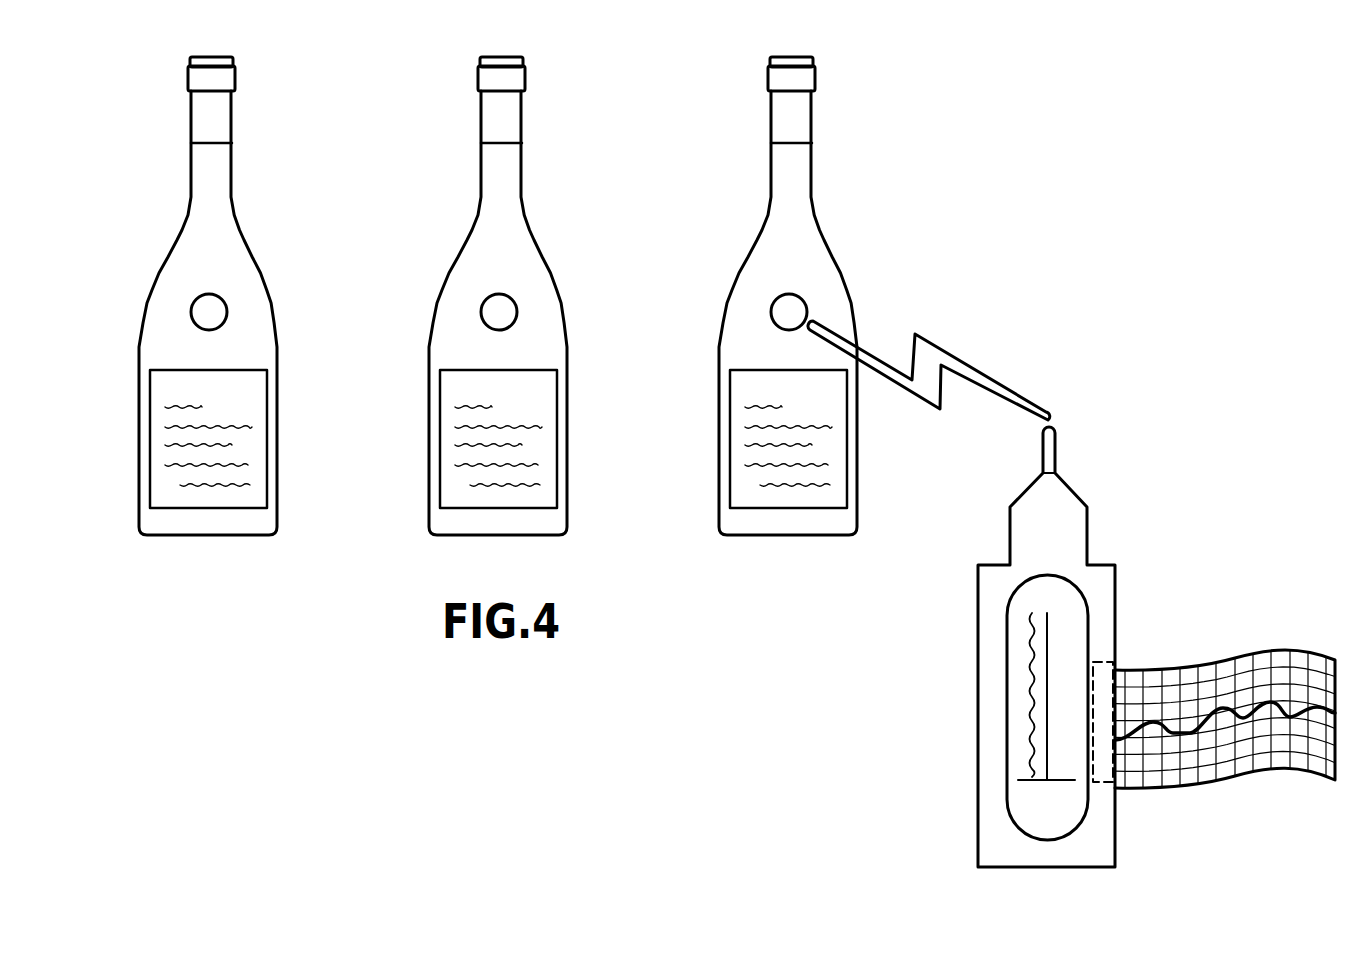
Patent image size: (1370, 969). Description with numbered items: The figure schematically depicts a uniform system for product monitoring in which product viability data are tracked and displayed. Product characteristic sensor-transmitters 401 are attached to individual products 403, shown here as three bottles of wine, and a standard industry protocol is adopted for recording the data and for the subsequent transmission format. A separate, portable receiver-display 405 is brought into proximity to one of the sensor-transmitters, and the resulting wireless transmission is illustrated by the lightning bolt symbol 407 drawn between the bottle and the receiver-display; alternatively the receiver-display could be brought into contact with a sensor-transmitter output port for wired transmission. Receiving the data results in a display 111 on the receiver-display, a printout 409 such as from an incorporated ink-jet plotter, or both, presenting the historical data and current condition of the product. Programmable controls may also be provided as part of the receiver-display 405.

The product characteristic sensor-transmitter 401 is at (203, 312).
The product 403 is at (238, 225).
The receiver-display 405 is at (950, 737).
The lightning bolt symbol 407 is at (932, 340).
The printout 409 is at (1268, 657).
The display 111 is at (1077, 807).